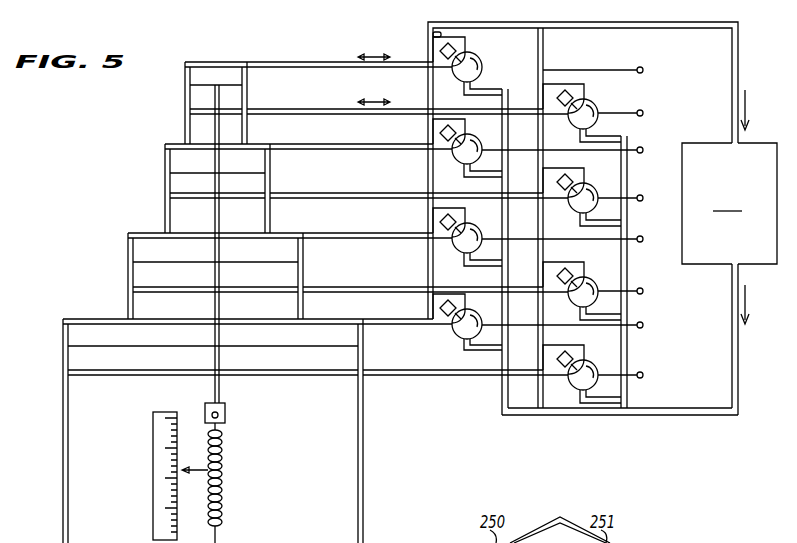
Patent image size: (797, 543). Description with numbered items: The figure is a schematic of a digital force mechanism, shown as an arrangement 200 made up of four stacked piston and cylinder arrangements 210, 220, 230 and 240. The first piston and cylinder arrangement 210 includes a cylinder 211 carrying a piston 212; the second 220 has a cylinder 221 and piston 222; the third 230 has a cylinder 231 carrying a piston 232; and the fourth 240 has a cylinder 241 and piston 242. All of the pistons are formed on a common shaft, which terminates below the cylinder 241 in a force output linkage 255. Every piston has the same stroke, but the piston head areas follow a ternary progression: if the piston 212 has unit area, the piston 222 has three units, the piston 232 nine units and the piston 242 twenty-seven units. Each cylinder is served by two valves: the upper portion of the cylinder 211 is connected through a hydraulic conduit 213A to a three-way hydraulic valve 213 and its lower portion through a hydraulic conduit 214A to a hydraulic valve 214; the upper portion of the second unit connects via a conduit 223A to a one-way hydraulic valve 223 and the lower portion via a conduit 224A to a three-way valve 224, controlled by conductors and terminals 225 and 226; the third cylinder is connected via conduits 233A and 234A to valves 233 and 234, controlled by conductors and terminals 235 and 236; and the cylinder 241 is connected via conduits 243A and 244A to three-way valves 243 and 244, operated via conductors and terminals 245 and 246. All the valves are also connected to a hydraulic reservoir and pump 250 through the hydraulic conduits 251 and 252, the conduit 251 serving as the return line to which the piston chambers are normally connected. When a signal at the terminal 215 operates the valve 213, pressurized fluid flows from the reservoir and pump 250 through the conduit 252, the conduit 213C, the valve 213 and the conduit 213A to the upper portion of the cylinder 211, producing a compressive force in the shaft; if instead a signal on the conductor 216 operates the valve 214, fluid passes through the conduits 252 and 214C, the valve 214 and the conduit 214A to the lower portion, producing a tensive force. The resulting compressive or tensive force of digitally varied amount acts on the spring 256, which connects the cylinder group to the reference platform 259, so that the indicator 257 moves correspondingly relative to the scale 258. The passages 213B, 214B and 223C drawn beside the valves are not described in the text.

The arrangement 200 is at (312, 18).
The piston and cylinder arrangement 210 is at (185, 84).
The cylinder 211 is at (248, 87).
The piston 212 is at (207, 88).
The piston and cylinder arrangement 220 is at (165, 172).
The cylinder 221 is at (266, 173).
The piston 222 is at (200, 174).
The piston and cylinder arrangement 230 is at (128, 270).
The cylinder 231 is at (303, 265).
The piston 232 is at (160, 263).
The piston and cylinder arrangement 240 is at (65, 355).
The cylinder 241 is at (363, 355).
The piston 242 is at (93, 348).
The three-way hydraulic valve 213 is at (478, 58).
The hydraulic conduit 213A is at (320, 65).
The first valve inlet port 213B is at (433, 35).
The conduit 213C is at (485, 92).
The hydraulic valve 214 is at (592, 101).
The hydraulic conduit 214A is at (345, 109).
The second valve supply line 214B is at (575, 67).
The conduit 214C is at (590, 138).
The terminal 215 is at (646, 66).
The conductor 216 is at (655, 108).
The one-way hydraulic valve 223 is at (451, 152).
The conduit 223A is at (344, 144).
The third valve exhaust passage 223C is at (478, 177).
The three-way valve 224 is at (582, 184).
The conduit 224A is at (358, 193).
The conductor and terminal 225 is at (645, 141).
The conductor and terminal 226 is at (668, 192).
The valve 233 is at (433, 224).
The conduit 233A is at (357, 233).
The valve 234 is at (580, 278).
The conduit 234A is at (368, 287).
The conductor and terminal 235 is at (668, 236).
The conductor and terminal 236 is at (667, 280).
The three-way valve 243 is at (458, 334).
The conduit 243A is at (422, 319).
The three-way valve 244 is at (580, 359).
The conduit 244A is at (373, 375).
The conductor and terminal 245 is at (665, 318).
The conductor and terminal 246 is at (657, 363).
The hydraulic reservoir and pump 250 is at (712, 143).
The hydraulic conduit 251 is at (708, 28).
The hydraulic conduit 252 is at (716, 397).
The force output linkage 255 is at (225, 409).
The spring 256 is at (222, 456).
The indicator 257 is at (190, 472).
The scale 258 is at (155, 441).
The reference platform 259 is at (338, 542).